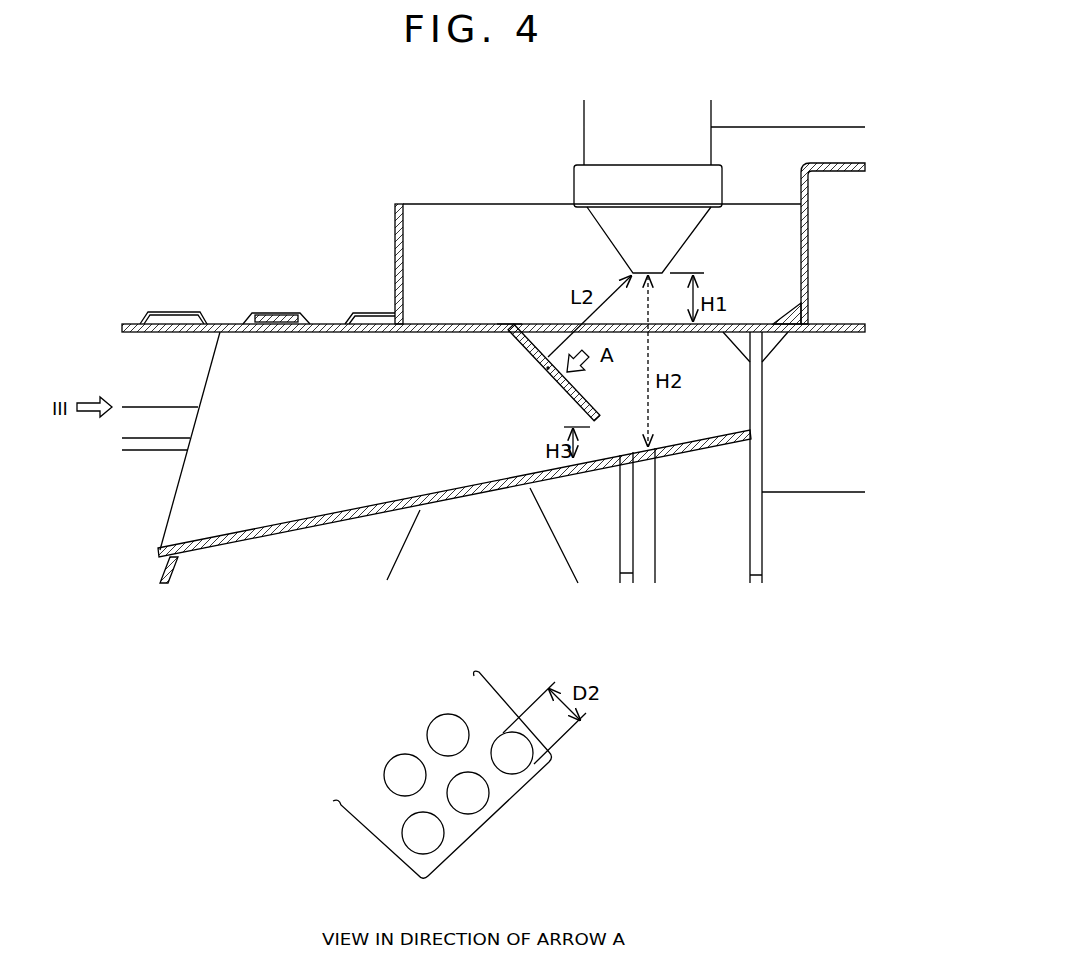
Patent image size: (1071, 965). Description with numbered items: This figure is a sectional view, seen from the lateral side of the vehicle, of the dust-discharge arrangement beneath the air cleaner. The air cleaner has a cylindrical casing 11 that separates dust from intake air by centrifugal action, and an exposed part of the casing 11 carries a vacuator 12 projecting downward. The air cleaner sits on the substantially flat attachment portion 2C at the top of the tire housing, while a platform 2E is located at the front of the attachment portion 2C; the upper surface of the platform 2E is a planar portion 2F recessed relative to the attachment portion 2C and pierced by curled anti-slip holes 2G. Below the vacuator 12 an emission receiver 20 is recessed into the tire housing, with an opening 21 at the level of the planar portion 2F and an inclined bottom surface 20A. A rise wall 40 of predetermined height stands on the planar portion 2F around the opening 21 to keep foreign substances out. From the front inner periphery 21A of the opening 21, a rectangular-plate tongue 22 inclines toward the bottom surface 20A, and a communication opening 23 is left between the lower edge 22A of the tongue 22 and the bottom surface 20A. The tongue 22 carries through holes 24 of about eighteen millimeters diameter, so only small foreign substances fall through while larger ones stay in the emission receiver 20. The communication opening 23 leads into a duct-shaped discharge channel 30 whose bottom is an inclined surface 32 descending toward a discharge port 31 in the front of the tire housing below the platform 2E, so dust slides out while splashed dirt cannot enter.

The attachment portion 2C is at (843, 162).
The platform 2E is at (174, 274).
The planar portion 2F is at (338, 320).
The anti-slip holes 2G is at (284, 314).
The casing 11 is at (772, 126).
The vacuator 12 is at (608, 241).
The emission receiver 20 is at (716, 358).
The bottom surface 20A is at (680, 436).
The opening 21 is at (552, 323).
The front inner periphery 21A is at (506, 325).
The tongue 22 is at (574, 390).
The lower edge 22A is at (628, 418).
The communication opening 23 is at (594, 442).
The through holes 24 is at (544, 368).
The discharge channel 30 is at (337, 495).
The discharge port 31 is at (165, 507).
The inclined surface 32 is at (493, 478).
The rise wall 40 is at (392, 226).